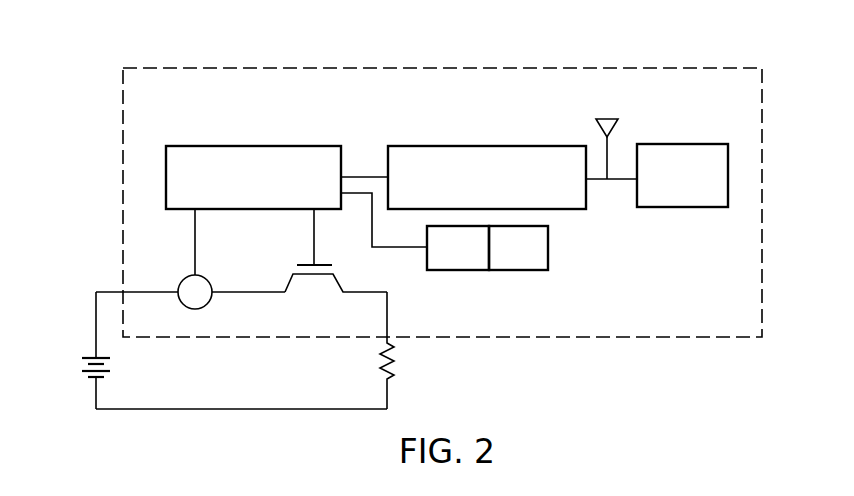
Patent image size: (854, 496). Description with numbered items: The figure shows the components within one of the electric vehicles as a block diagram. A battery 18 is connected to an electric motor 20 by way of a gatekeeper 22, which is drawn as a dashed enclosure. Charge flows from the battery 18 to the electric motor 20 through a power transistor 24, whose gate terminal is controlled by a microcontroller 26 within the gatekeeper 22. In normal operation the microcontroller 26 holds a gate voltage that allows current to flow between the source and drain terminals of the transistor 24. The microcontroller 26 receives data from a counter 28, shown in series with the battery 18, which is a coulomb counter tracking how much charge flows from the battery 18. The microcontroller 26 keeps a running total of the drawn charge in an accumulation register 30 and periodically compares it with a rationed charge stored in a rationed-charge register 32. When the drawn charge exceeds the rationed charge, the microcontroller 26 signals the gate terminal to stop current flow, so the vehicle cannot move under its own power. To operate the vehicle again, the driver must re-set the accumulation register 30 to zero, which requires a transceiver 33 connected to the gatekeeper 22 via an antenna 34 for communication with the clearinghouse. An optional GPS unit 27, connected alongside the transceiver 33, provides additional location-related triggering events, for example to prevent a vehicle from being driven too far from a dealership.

The battery 18 is at (73, 371).
The electric motor 20 is at (406, 368).
The gatekeeper 22 is at (687, 66).
The power transistor 24 is at (315, 276).
The microcontroller 26 is at (252, 210).
The GPS unit 27 is at (684, 208).
The counter 28 is at (192, 275).
The accumulation register 30 is at (459, 271).
The rationed-charge register 32 is at (518, 271).
The transceiver 33 is at (486, 145).
The antenna 34 is at (607, 118).